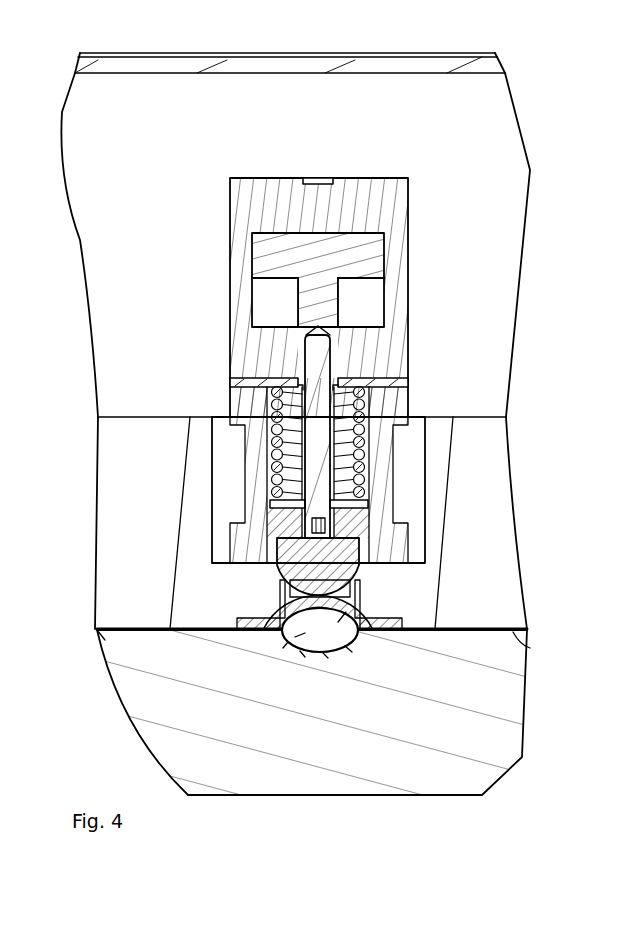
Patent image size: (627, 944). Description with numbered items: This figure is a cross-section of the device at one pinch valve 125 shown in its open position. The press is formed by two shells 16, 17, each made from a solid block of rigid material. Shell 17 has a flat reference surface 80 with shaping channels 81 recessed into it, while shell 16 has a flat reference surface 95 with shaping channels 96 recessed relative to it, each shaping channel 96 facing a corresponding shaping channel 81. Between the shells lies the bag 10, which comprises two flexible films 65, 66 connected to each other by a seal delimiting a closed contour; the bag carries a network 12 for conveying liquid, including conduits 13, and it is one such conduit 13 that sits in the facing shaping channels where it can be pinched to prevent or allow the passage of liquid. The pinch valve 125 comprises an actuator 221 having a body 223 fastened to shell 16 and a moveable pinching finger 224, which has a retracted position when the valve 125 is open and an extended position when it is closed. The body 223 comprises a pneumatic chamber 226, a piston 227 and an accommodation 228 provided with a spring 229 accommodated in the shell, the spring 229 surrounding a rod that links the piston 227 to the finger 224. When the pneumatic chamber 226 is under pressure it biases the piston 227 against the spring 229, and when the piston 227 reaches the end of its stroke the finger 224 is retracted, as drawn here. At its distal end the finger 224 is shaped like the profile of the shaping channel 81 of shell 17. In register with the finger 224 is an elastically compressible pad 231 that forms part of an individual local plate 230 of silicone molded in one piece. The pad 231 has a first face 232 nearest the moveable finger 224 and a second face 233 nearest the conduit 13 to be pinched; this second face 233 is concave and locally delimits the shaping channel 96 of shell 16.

The bag 10 is at (530, 648).
The network 12 is at (338, 650).
The conduit 13 is at (283, 650).
The shell 16 is at (100, 597).
The shell 17 is at (136, 712).
The flexible film 65 is at (278, 626).
The flexible film 66 is at (328, 655).
The reference surface 80 is at (100, 638).
The shaping channel 81 is at (302, 660).
The reference surface 95 is at (97, 629).
The shaping channel 96 is at (340, 618).
The pinch valve 125 is at (432, 169).
The actuator 221 is at (410, 352).
The body 223 is at (410, 390).
The moveable pinching finger 224 is at (348, 545).
The pneumatic chamber 226 is at (368, 296).
The piston 227 is at (277, 250).
The accommodation 228 is at (267, 456).
The spring 229 is at (270, 420).
The individual local plate 230 is at (384, 617).
The elastically compressible pad 231 is at (280, 600).
The first face 232 is at (352, 600).
The second face 233 is at (275, 603).